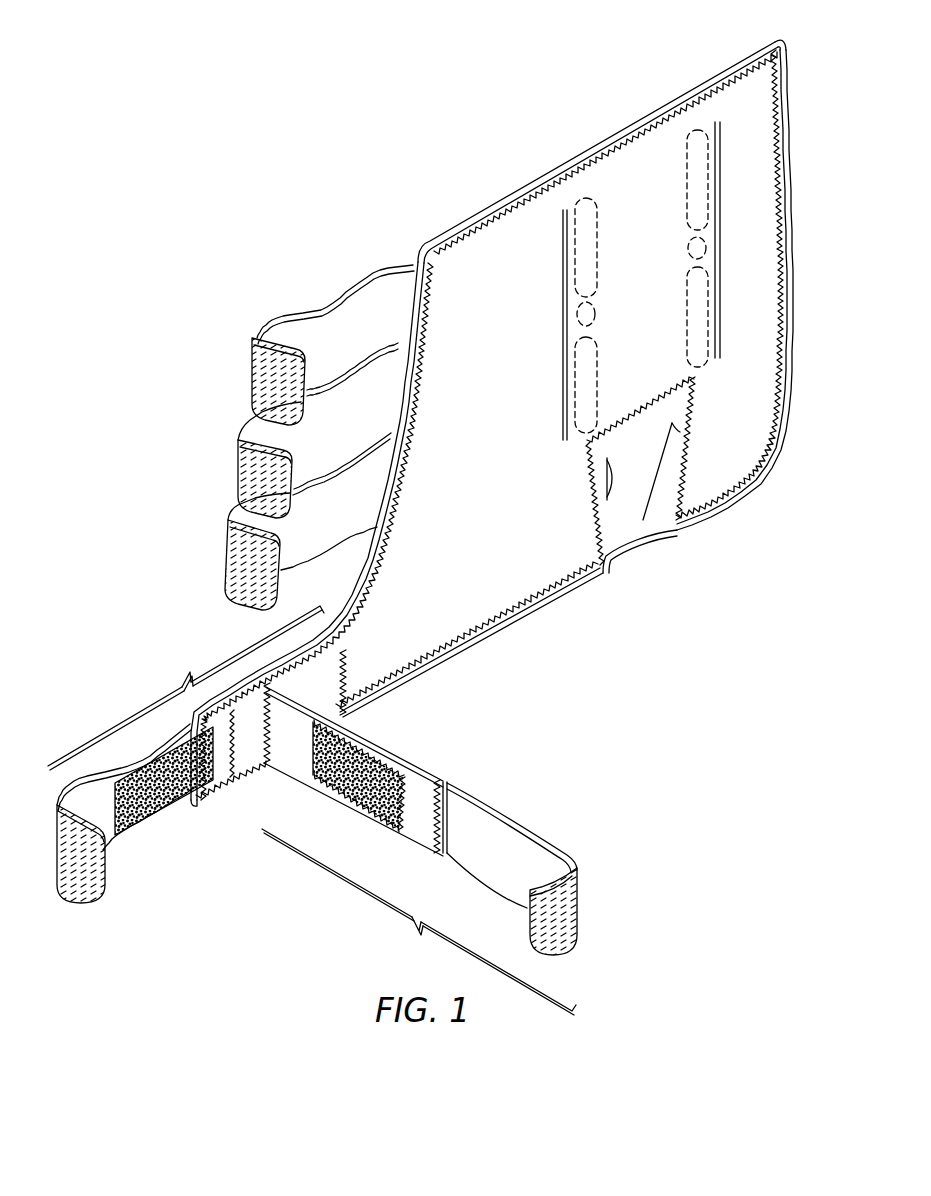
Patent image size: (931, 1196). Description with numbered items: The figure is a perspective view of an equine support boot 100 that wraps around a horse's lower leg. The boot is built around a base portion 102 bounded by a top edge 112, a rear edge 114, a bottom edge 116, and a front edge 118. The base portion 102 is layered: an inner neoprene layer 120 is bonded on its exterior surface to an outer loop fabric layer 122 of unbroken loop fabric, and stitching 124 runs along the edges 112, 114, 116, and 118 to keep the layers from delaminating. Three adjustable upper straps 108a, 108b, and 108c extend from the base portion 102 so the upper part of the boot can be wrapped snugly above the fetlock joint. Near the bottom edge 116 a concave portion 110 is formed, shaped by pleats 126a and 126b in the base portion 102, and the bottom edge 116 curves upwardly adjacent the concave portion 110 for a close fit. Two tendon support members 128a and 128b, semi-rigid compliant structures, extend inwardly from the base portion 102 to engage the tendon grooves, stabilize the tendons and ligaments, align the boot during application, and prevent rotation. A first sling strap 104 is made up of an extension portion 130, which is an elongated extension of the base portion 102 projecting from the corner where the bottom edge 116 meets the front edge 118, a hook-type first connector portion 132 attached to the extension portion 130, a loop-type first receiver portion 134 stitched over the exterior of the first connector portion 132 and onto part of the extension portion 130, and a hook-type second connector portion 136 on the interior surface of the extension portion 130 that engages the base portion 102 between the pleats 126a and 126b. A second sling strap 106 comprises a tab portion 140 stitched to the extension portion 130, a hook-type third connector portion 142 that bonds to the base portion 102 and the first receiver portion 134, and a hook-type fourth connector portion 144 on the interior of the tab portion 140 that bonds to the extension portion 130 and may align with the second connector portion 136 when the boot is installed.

The equine support boot 100 is at (396, 147).
The base portion 102 is at (660, 213).
The first sling strap 104 is at (186, 688).
The second sling strap 106 is at (419, 922).
The upper strap 108a is at (252, 368).
The upper strap 108b is at (238, 460).
The upper strap 108c is at (227, 551).
The concave portion 110 is at (643, 388).
The top edge 112 is at (522, 185).
The rear edge 114 is at (792, 62).
The bottom edge 116 is at (505, 630).
The front edge 118 is at (393, 412).
The inner neoprene layer 120 is at (597, 150).
The outer loop fabric layer 122 is at (708, 483).
The stitching 124 is at (480, 234).
The pleat 126a is at (612, 492).
The pleat 126b is at (695, 426).
The tendon support member 128a is at (568, 337).
The tendon support member 128b is at (714, 240).
The extension portion 130 is at (218, 798).
The first connector portion 132 is at (67, 903).
The first receiver portion 134 is at (130, 837).
The second connector portion 136 is at (343, 650).
The tab portion 140 is at (410, 857).
The third connector portion 142 is at (483, 889).
The fourth connector portion 144 is at (337, 787).